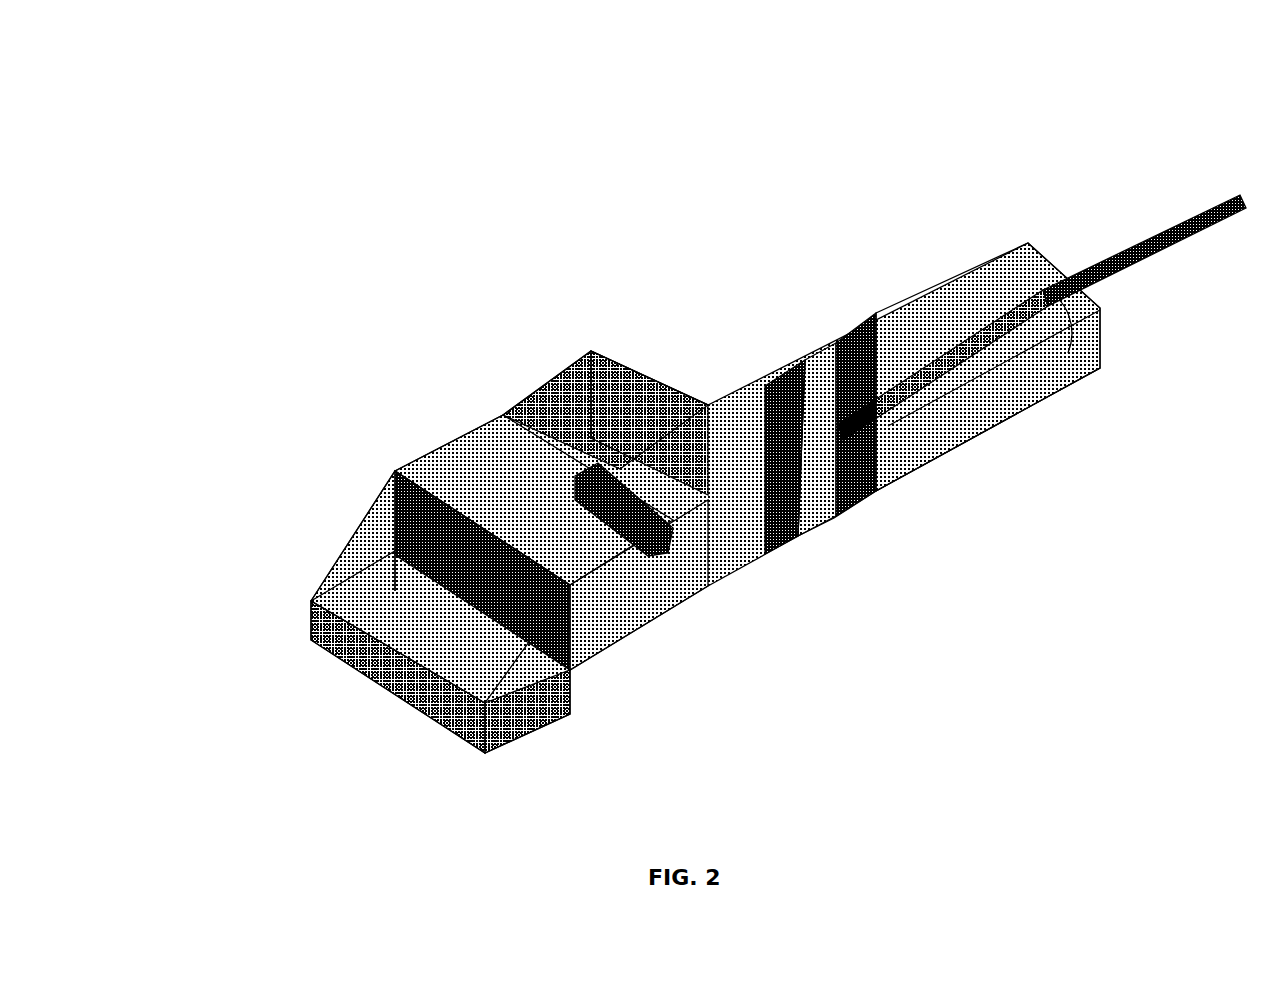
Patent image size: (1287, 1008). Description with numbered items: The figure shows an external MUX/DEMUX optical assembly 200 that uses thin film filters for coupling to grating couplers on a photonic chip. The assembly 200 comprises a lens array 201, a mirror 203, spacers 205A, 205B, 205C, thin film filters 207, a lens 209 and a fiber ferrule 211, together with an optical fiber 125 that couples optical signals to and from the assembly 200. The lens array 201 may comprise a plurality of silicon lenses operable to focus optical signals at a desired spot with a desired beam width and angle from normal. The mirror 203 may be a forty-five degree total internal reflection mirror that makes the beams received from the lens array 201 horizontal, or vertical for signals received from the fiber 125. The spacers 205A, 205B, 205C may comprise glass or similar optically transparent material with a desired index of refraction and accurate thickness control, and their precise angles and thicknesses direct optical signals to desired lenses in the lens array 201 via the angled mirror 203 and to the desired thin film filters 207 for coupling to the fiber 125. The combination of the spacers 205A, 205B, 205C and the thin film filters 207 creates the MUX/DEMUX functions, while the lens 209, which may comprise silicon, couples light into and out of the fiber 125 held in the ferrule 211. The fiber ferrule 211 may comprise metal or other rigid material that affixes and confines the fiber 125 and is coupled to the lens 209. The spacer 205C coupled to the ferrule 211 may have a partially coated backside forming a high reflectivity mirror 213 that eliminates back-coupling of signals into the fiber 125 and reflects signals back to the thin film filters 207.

The optical assembly 200 is at (682, 431).
The lens array 201 is at (530, 716).
The mirror 203 is at (348, 521).
The spacer 205A is at (626, 601).
The spacer 205B is at (782, 546).
The spacer 205C is at (828, 516).
The thin film filters 207 is at (653, 530).
The lens 209 is at (868, 492).
The fiber ferrule 211 is at (996, 410).
The high reflectivity mirror 213 is at (628, 380).
The optical fiber 125 is at (1134, 276).